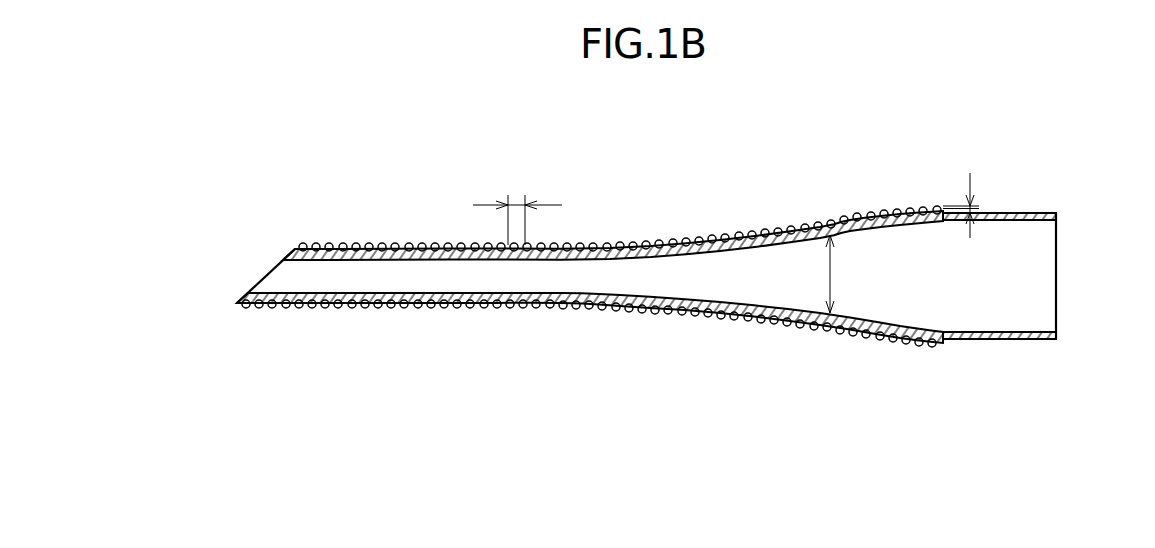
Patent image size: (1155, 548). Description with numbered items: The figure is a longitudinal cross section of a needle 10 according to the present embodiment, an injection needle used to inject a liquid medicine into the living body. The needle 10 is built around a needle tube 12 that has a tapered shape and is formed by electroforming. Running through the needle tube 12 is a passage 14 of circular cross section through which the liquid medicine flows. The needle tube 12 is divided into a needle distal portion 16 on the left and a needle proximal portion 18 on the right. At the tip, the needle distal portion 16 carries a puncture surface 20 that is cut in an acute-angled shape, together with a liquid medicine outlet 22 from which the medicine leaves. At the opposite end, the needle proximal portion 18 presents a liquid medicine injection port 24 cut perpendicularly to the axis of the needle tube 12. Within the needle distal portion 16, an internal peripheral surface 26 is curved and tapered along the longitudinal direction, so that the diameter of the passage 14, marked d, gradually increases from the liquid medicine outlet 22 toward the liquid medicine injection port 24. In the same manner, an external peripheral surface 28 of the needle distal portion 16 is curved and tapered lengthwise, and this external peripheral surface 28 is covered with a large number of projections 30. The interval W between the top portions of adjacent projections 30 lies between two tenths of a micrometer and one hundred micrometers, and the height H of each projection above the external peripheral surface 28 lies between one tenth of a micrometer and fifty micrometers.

The needle 10 is at (891, 109).
The needle tube 12 is at (1013, 341).
The passage 14 is at (1021, 227).
The needle distal portion 16 is at (443, 219).
The needle proximal portion 18 is at (1000, 181).
The puncture surface 20 is at (237, 300).
The liquid medicine outlet 22 is at (279, 276).
The liquid medicine injection port 24 is at (1034, 283).
The internal peripheral surface 26 is at (853, 323).
The external peripheral surface 28 is at (370, 246).
The projections 30 is at (706, 242).